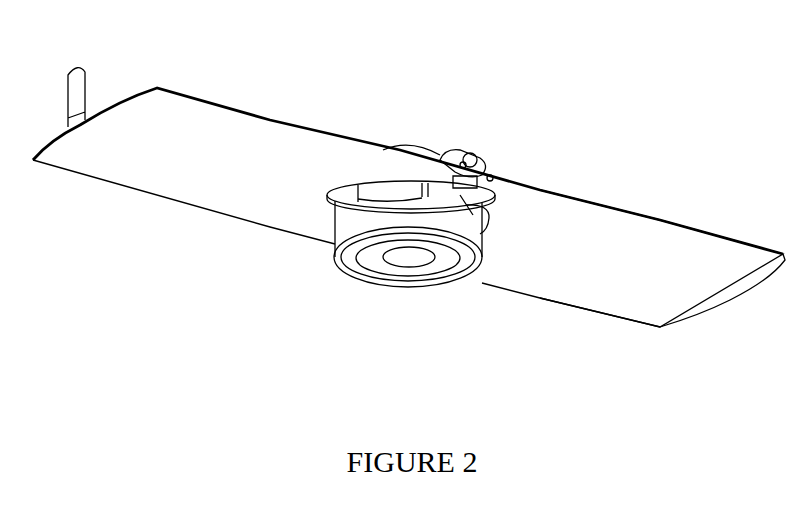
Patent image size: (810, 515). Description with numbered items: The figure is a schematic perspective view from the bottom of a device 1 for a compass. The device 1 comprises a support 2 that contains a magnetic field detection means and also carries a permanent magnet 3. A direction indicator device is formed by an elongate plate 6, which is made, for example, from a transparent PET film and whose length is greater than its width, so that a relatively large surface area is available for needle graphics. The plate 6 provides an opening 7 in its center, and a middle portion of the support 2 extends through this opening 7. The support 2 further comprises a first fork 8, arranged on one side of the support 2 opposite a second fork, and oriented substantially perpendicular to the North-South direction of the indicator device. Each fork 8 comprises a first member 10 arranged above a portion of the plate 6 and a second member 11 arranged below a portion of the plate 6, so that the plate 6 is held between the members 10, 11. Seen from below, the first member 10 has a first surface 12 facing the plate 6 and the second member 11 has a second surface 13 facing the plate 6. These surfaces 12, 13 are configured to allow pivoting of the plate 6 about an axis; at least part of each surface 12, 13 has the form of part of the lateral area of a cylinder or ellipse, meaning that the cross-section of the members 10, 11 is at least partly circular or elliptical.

The device 1 is at (593, 158).
The support 2 is at (397, 142).
The permanent magnet 3 is at (353, 225).
The plate 6 is at (655, 242).
The opening 7 is at (355, 183).
The first fork 8 is at (490, 177).
The first member 10 is at (460, 160).
The second member 11 is at (458, 197).
The first surface 12 is at (445, 157).
The second surface 13 is at (485, 197).